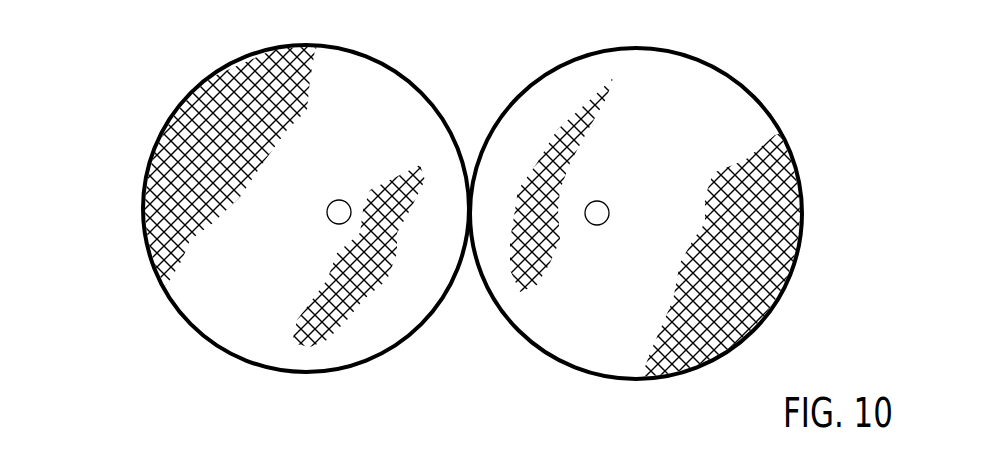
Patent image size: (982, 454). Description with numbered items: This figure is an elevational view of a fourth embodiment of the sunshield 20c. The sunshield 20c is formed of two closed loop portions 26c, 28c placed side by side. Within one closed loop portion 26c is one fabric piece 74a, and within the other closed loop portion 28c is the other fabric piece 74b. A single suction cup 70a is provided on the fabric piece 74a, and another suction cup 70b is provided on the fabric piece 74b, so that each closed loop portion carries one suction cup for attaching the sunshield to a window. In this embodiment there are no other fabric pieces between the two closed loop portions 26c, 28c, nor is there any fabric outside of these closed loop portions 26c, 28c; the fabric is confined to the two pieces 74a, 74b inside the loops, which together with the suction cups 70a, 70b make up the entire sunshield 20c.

The sunshield 20c is at (462, 233).
The closed loop portion 26c is at (257, 233).
The closed loop portion 28c is at (674, 239).
The suction cup 70a is at (346, 209).
The suction cup 70b is at (592, 203).
The fabric piece 74a is at (295, 342).
The fabric piece 74b is at (613, 343).